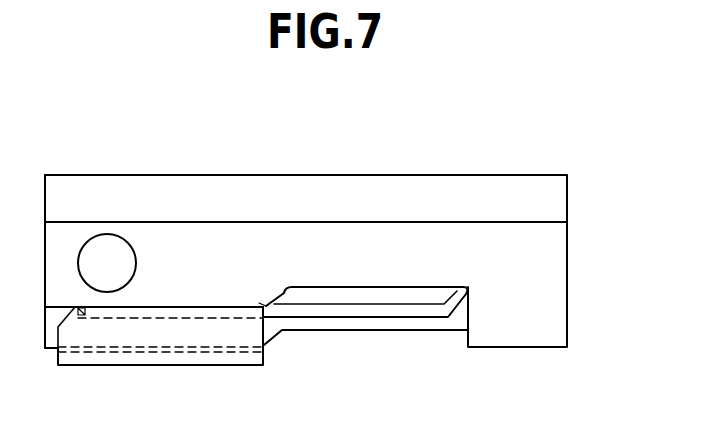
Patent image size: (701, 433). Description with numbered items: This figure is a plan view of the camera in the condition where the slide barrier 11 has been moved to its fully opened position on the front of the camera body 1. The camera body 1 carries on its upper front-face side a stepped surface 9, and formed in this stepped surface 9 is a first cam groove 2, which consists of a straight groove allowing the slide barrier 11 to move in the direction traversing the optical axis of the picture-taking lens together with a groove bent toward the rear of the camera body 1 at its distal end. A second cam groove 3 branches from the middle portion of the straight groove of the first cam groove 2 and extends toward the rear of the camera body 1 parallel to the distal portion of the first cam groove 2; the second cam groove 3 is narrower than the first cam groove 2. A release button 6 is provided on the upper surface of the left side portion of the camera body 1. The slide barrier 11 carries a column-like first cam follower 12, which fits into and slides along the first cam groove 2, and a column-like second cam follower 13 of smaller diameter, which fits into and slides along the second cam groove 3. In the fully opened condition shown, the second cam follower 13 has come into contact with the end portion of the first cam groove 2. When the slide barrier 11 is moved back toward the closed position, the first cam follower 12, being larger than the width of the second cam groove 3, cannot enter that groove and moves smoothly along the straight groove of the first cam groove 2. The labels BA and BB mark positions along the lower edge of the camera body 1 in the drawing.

The camera body 1 is at (550, 257).
The first cam groove 2 is at (372, 307).
The second cam groove 3 is at (277, 292).
The release button 6 is at (111, 260).
The stepped surface 9 is at (53, 348).
The slide barrier 11 is at (162, 370).
The first cam follower 12 is at (259, 303).
The second cam follower 13 is at (79, 307).
The bottom surface A BA is at (425, 331).
The bottom surface B BB is at (537, 348).